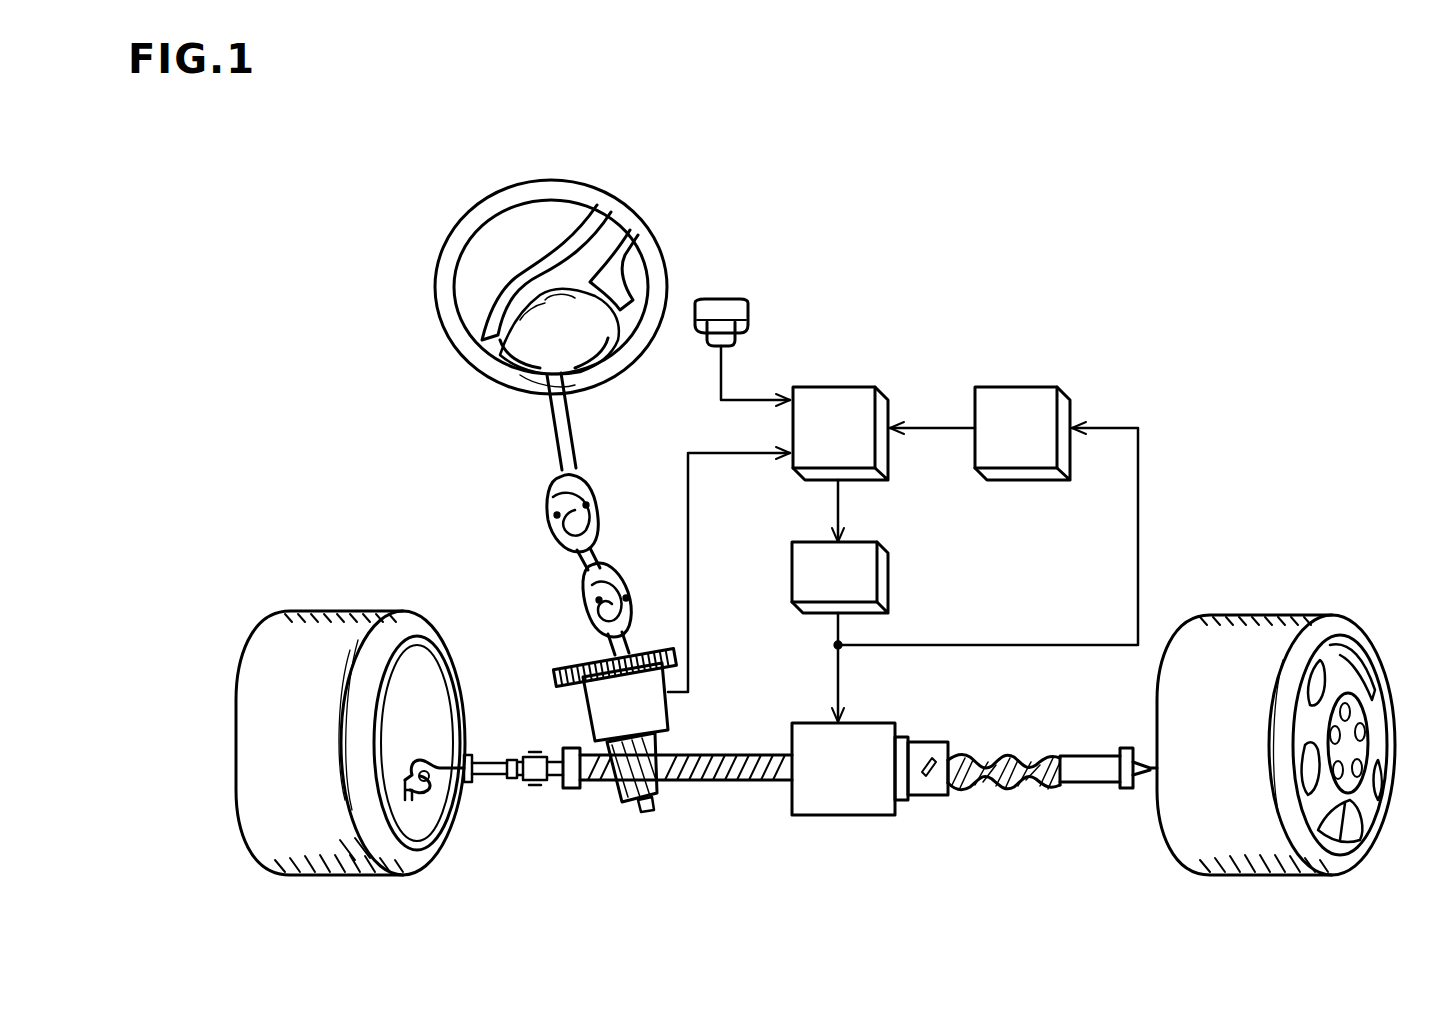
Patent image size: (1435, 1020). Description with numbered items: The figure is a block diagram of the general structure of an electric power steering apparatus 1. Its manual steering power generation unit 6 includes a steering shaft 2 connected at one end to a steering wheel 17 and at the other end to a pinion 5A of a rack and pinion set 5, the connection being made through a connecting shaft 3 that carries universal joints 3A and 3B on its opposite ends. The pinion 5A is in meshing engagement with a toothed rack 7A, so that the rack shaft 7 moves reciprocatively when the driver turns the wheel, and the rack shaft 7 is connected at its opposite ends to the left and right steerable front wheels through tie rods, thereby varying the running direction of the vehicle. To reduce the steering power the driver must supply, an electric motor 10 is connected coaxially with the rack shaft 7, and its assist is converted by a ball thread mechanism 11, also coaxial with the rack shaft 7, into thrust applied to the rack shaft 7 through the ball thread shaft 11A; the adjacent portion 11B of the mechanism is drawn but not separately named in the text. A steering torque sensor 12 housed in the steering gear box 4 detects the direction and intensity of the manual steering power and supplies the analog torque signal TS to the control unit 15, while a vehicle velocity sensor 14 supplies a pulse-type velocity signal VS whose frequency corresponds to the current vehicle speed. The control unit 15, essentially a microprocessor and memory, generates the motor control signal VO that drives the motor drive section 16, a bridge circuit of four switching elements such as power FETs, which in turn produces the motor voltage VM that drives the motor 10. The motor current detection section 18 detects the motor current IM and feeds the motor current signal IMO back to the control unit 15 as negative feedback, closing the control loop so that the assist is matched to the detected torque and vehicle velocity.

The electric power steering apparatus 1 is at (768, 200).
The steering shaft 2 is at (556, 430).
The connecting shaft 3 is at (570, 530).
The universal joint 3A is at (590, 484).
The universal joint 3B is at (585, 592).
The steering gear box 4 is at (615, 800).
The rack and pinion set 5 is at (596, 790).
The pinion 5A is at (650, 792).
The manual steering power generation unit 6 is at (536, 516).
The rack shaft 7 is at (1100, 780).
The toothed rack 7A is at (685, 770).
The electric motor 10 is at (842, 800).
The ball thread mechanism 11 is at (975, 772).
The ball thread shaft 11A is at (1008, 790).
The worm wheel housing 11B is at (930, 796).
The steering torque sensor 12 is at (583, 702).
The vehicle velocity sensor 14 is at (722, 300).
The control unit 15 is at (808, 387).
The motor drive section 16 is at (885, 580).
The steering wheel 17 is at (462, 238).
The motor current detection section 18 is at (996, 387).